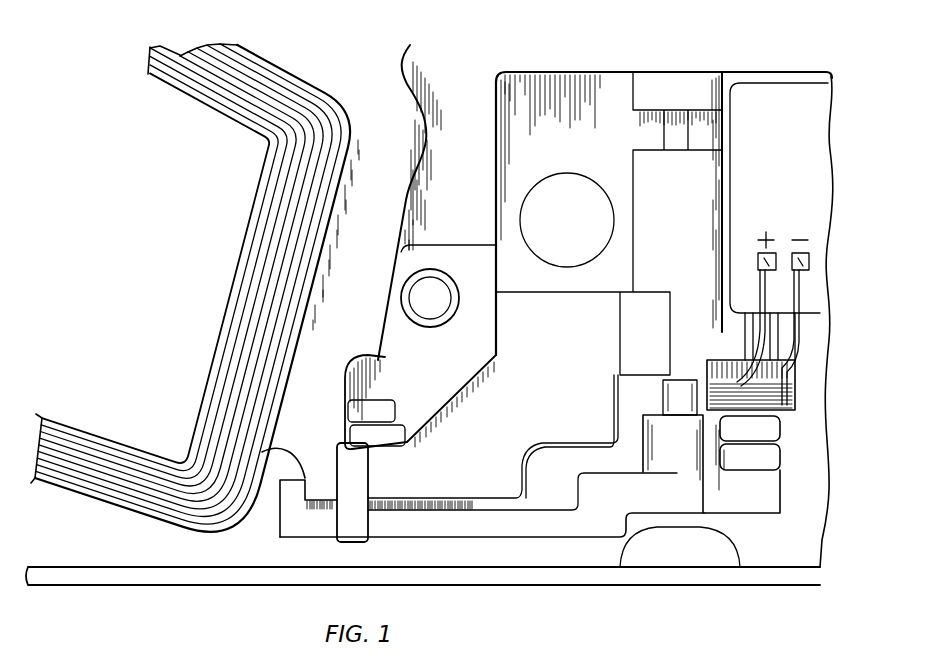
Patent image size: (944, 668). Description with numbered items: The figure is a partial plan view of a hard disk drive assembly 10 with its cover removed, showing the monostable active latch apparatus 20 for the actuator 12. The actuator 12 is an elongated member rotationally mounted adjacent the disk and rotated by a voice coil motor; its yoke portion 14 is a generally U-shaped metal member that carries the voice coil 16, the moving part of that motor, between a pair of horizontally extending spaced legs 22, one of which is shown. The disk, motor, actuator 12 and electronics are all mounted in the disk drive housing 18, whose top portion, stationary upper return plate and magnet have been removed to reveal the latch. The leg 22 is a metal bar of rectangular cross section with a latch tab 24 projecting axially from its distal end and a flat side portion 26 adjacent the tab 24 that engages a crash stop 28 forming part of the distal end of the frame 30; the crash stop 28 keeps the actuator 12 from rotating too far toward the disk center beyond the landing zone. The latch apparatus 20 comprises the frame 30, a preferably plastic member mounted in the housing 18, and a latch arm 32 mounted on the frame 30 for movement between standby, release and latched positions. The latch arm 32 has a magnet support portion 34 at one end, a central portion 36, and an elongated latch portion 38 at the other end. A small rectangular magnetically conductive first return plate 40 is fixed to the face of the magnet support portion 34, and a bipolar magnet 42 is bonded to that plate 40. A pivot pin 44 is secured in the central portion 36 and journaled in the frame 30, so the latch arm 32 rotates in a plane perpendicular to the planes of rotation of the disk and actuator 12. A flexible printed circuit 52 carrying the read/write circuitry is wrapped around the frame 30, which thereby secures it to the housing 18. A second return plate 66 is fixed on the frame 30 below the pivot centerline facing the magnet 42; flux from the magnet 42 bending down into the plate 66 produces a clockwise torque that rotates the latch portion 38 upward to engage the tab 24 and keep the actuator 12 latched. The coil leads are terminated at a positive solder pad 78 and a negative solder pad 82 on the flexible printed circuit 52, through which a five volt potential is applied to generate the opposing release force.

The hard disk drive assembly 10 is at (138, 596).
The actuator 12 is at (86, 515).
The yoke portion 14 is at (418, 168).
The voice coil 16 is at (87, 432).
The disk drive housing 18 is at (270, 575).
The monostable active latch apparatus 20 is at (558, 547).
The leg 22 is at (390, 222).
The latch tab 24 is at (325, 490).
The flat side portion 26 is at (327, 383).
The crash stop 28 is at (396, 400).
The frame 30 is at (592, 377).
The latch arm 32 is at (584, 548).
The magnet support portion 34 is at (748, 497).
The central portion 36 is at (668, 495).
The latch portion 38 is at (478, 527).
The first return plate 40 is at (766, 461).
The bipolar magnet 42 is at (766, 428).
The pivot pin 44 is at (663, 393).
The flexible printed circuit 52 is at (800, 140).
The second return plate 66 is at (790, 372).
The positive solder pad 78 is at (758, 262).
The negative solder pad 82 is at (788, 262).